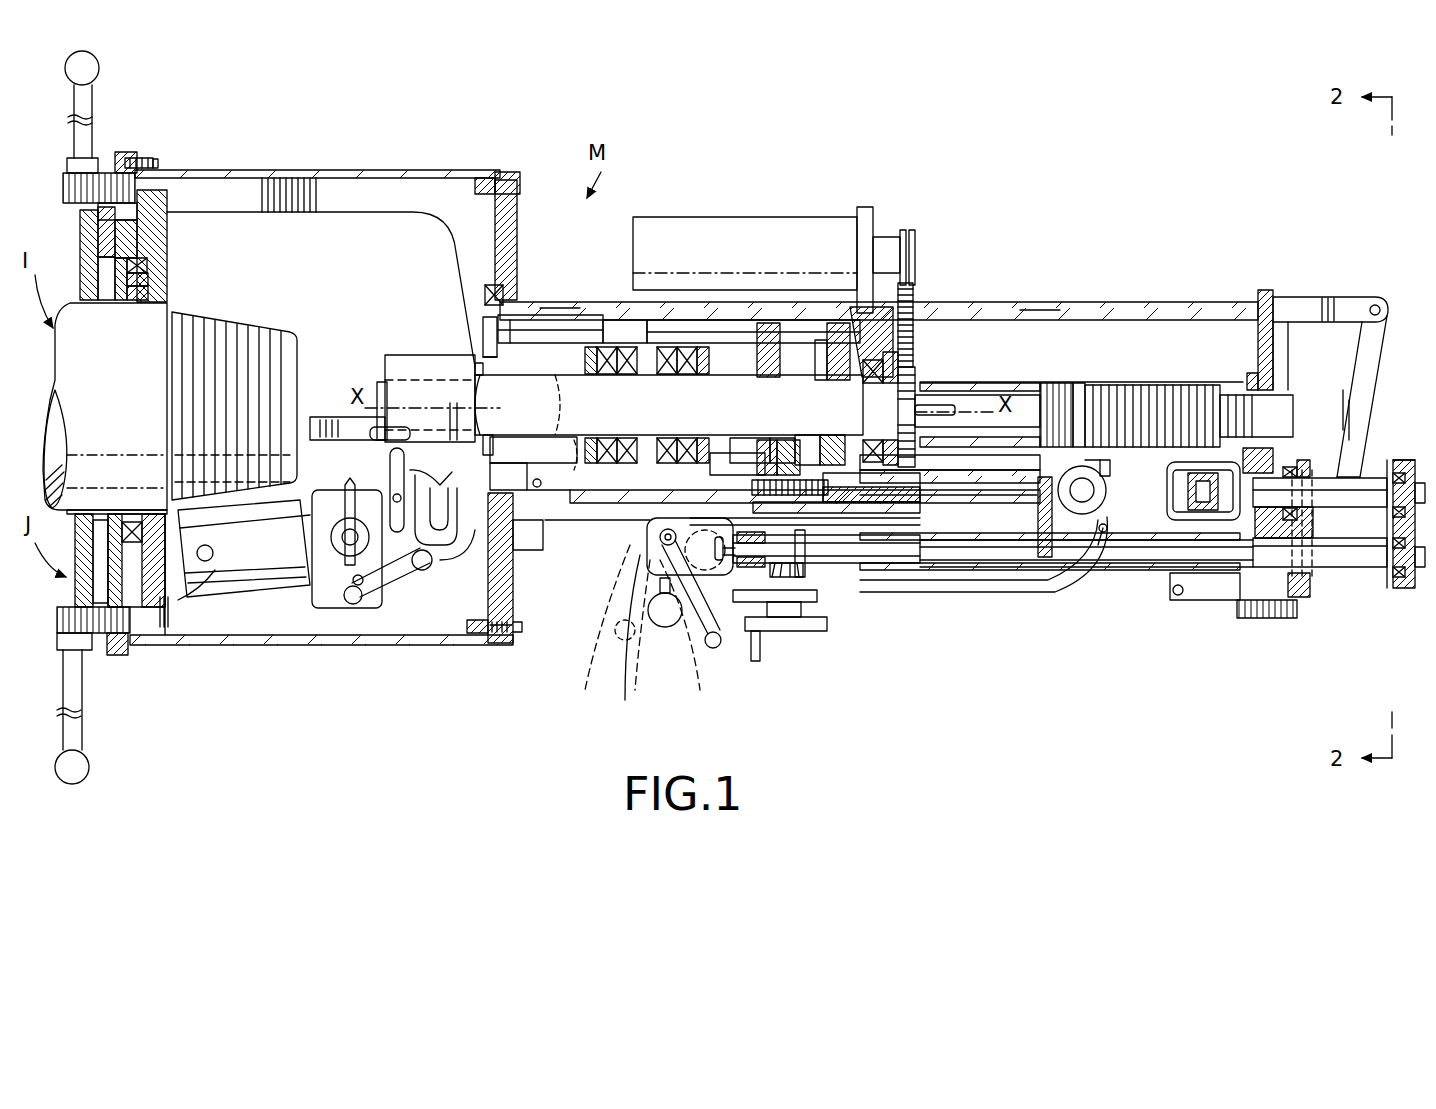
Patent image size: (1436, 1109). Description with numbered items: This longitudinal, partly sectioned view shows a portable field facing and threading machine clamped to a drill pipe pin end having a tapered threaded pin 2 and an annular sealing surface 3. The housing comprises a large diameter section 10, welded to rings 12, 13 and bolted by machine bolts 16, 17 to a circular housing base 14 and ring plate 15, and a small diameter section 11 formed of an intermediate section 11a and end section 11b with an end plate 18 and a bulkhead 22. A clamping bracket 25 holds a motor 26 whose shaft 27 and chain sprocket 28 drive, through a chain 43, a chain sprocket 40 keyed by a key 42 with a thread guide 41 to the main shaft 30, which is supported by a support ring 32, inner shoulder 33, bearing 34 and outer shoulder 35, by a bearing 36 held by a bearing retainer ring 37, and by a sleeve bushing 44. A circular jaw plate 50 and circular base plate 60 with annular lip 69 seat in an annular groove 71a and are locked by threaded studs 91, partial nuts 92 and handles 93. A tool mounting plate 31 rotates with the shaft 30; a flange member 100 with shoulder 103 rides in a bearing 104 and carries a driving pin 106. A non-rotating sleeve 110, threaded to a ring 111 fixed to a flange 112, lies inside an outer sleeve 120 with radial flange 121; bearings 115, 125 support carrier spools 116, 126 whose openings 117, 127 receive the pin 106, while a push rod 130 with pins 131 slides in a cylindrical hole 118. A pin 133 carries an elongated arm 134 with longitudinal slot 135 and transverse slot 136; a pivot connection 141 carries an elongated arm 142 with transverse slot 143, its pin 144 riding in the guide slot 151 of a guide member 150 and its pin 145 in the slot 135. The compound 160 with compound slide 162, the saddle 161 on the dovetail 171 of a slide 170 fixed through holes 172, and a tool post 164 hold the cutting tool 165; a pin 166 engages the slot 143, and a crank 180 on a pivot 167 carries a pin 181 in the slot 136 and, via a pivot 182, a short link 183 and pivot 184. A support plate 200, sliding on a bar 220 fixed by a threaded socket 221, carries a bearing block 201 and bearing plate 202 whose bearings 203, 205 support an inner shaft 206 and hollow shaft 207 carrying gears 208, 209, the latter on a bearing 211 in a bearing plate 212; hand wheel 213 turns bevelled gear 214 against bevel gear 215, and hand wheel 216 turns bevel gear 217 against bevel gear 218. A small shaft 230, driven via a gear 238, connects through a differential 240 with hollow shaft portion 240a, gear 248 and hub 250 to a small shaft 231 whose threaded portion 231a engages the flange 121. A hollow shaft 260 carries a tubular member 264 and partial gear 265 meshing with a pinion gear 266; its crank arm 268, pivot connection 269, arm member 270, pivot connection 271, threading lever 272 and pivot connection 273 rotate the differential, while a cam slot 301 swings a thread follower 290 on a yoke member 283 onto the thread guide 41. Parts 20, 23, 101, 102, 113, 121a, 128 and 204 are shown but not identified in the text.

The threaded or tapered pin 2 is at (262, 330).
The annular sealing surface 3 is at (176, 322).
The large diameter section 10 is at (325, 170).
The small diameter section 11 is at (987, 296).
The intermediate section 11a is at (561, 302).
The end section 11b is at (1041, 303).
The ring 12 is at (150, 157).
The ring 13 is at (480, 196).
The circular housing base 14 is at (124, 152).
The ring plate 15 is at (518, 210).
The machine bolt 16 is at (158, 163).
The machine bolt 17 is at (515, 172).
The end plate 18 is at (1264, 290).
The sleeve housing 20 is at (492, 290).
The motor mount or bulkhead 22 is at (882, 344).
The bearing 23 is at (870, 320).
The clamping bracket 25 is at (868, 216).
The motor 26 is at (749, 217).
The shaft 27 is at (873, 255).
The chain sprocket 28 is at (914, 252).
The main shaft 30 is at (548, 385).
The tool mounting plate 31 is at (365, 235).
The support ring 32 is at (167, 212).
The inner shoulder 33 is at (148, 262).
The bearing 34 is at (148, 278).
The outer shoulder 35 is at (133, 297).
The bearing 36 is at (832, 373).
The bearing retainer ring 37 is at (876, 475).
The chain sprocket 40 is at (908, 380).
The thread guide 41 is at (1066, 383).
The key 42 is at (950, 410).
The chain 43 is at (906, 308).
The sleeve bushing 44 is at (1248, 376).
The circular jaw plate 50 is at (80, 577).
The circular base plate 60 is at (86, 258).
The annular lip 69 is at (96, 222).
The annular groove 71a is at (137, 228).
The threaded stud 91 is at (117, 624).
The partial nut 92 is at (83, 641).
The handle 93 is at (78, 692).
The flange member 100 is at (498, 367).
The collar 101 is at (476, 368).
The spindle nose 102 is at (480, 394).
The shoulder 103 is at (512, 600).
The bearing 104 is at (485, 296).
The driving pin 106 is at (526, 323).
The tubular carrier or sleeve 110 is at (731, 376).
The ring 111 is at (826, 351).
The flange 112 is at (842, 327).
The ring 113 is at (832, 437).
The set of bearings 115 is at (612, 376).
The carrier spool 116 is at (580, 374).
The cylindrical opening 117 is at (617, 333).
The cylindrical hole 118 is at (613, 505).
The outer sleeve 120 is at (736, 376).
The radial flange 121 is at (778, 439).
The collar flange 121a is at (763, 438).
The set of bearings 125 is at (672, 376).
The carrier spool 126 is at (680, 438).
The cylindrical opening 127 is at (660, 330).
The plate 128 is at (612, 551).
The push rod 130 is at (612, 438).
The pin 131 is at (632, 440).
The pin 133 is at (536, 532).
The elongated arm 134 is at (515, 470).
The longitudinal slot 135 is at (455, 404).
The transverse slot 136 is at (425, 421).
The pin or pivot connection 141 is at (578, 440).
The elongated arm 142 is at (555, 437).
The transverse slot 143 is at (470, 522).
The pin 144 is at (425, 397).
The pin 145 is at (502, 437).
The guide member 150 is at (345, 417).
The guide slot 151 is at (320, 418).
The compound 160 is at (303, 627).
The saddle 161 is at (310, 533).
The compound slide 162 is at (320, 490).
The tool post 164 is at (318, 590).
The cutting tool 165 is at (310, 521).
The pin 166 is at (456, 512).
The pivot 167 is at (432, 566).
The slide 170 is at (267, 590).
The dovetail 171 is at (214, 572).
The holes 172 is at (166, 499).
The crank 180 is at (415, 587).
The pin 181 is at (390, 482).
The pivot 182 is at (412, 586).
The short link 183 is at (353, 588).
The pivot 184 is at (355, 606).
The support plate 200 is at (1123, 580).
The bearing block 201 is at (802, 556).
The bearing plate 202 is at (1386, 475).
The bearing 203 is at (751, 535).
The bushing 204 is at (791, 476).
The bearing 205 is at (1392, 556).
The rotating shaft 206 is at (1003, 549).
The hollow shaft 207 is at (956, 568).
The gear 208 is at (1413, 590).
The gear 209 is at (1302, 576).
The bearing 211 is at (1312, 558).
The bearing plate 212 is at (1297, 597).
The hand wheel 213 is at (812, 632).
The bevelled gear 214 is at (795, 571).
The bevel gear 215 is at (841, 555).
The hand wheel 216 is at (708, 652).
The bevel gear 217 is at (724, 610).
The bevel gear 218 is at (724, 562).
The bar 220 is at (647, 546).
The threaded socket 221 is at (505, 556).
The small shaft 230 is at (1353, 499).
The small shaft 231 is at (1173, 420).
The threaded portion 231a is at (818, 437).
The gear 238 is at (1409, 460).
The differential 240 is at (1226, 514).
The hollow shaft portion 240a is at (1377, 477).
The gear 248 is at (1301, 460).
The hub 250 is at (1282, 523).
The hollow shaft 260 is at (960, 473).
The tubular member 264 is at (1043, 558).
The partial gear 265 is at (1085, 466).
The pinion gear 266 is at (1175, 521).
The crank arm 268 is at (1080, 509).
The pivot connection 269 is at (1103, 533).
The arm member 270 is at (1046, 591).
The pivot connection 271 is at (660, 640).
The threading lever 272 is at (616, 640).
The pivot connection 273 is at (640, 660).
The yoke member 283 is at (1081, 383).
The groove thread follower 290 is at (1120, 396).
The cam slot 301 is at (1092, 497).